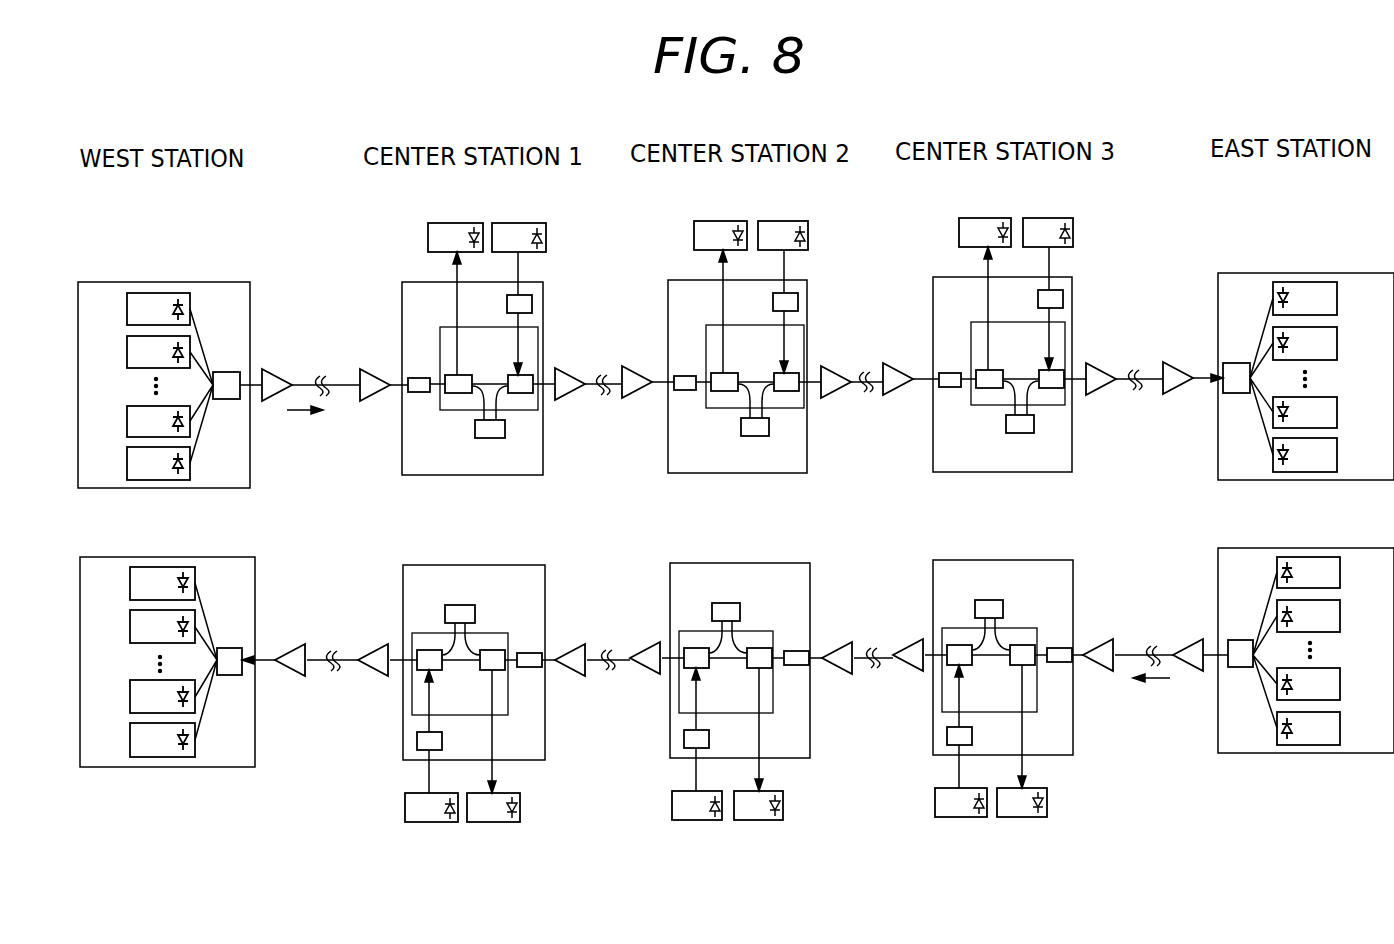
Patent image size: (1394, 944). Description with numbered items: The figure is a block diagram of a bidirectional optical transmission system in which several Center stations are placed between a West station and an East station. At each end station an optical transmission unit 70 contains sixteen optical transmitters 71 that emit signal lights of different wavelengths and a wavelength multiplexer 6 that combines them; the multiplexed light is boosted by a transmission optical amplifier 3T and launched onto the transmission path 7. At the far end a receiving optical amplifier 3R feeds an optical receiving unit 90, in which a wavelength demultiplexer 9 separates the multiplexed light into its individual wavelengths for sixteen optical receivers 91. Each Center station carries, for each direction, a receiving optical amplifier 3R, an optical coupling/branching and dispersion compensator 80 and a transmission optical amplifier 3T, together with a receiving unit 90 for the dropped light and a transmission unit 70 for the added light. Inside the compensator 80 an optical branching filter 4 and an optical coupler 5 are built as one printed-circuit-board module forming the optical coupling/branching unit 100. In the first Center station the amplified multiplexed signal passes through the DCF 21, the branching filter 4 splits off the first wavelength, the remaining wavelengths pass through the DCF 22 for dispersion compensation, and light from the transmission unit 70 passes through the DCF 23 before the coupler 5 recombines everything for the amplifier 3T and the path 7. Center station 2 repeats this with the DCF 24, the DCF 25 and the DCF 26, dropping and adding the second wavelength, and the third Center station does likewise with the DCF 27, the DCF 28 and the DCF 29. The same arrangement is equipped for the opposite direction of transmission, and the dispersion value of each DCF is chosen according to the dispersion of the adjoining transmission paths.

The optical coupler 2 is at (972, 734).
The optical branching filter 4 is at (1016, 665).
The optical coupler 5 is at (967, 665).
The wavelength multiplexer 6 is at (1238, 640).
The transmission path 7 is at (323, 385).
The wavelength demultiplexer 9 is at (230, 648).
The DCF 21 is at (418, 378).
The DCF 22 is at (475, 432).
The DCF 23 is at (507, 304).
The DCF 24 is at (685, 376).
The DCF 25 is at (741, 431).
The DCF 26 is at (773, 302).
The DCF 27 is at (949, 373).
The DCF 28 is at (1006, 427).
The DCF 29 is at (1038, 299).
The optical transmission unit 70 is at (1370, 753).
The optical transmitter 71 is at (105, 303).
The optical coupling/branching and dispersion compensator 80 is at (1073, 564).
The optical receiving unit 90 is at (110, 767).
The optical receiver 91 is at (1358, 296).
The optical coupling/branching unit 100 is at (1026, 628).
The transmission optical amplifier 3T is at (1191, 641).
The receiving optical amplifier 3R is at (1101, 639).